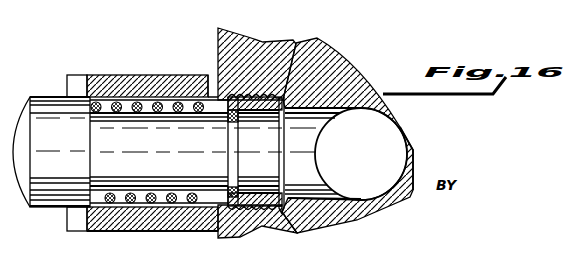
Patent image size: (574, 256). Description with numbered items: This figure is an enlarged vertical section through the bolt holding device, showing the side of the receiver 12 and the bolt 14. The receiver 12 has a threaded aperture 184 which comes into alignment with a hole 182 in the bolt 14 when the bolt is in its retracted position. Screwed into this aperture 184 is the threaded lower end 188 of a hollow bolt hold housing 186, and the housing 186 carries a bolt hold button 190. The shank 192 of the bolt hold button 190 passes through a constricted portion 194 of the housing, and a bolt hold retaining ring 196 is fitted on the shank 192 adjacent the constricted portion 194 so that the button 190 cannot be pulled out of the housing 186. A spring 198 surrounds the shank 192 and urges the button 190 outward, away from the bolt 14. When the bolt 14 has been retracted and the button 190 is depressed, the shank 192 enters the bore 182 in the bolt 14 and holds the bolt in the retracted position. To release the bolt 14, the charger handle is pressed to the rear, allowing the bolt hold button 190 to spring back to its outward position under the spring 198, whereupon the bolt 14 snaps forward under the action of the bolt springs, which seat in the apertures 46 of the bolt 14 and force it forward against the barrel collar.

The receiver 12 is at (252, 43).
The bolt 14 is at (334, 60).
The apertures 46 is at (394, 148).
The hole 182 is at (306, 163).
The threaded aperture 184 is at (233, 224).
The bolt hold housing 186 is at (88, 211).
The threaded lower end 188 is at (245, 93).
The bolt hold button 190 is at (42, 97).
The shank 192 is at (146, 147).
The constricted portion 194 is at (214, 96).
The bolt hold retaining ring 196 is at (226, 131).
The spring 198 is at (131, 74).